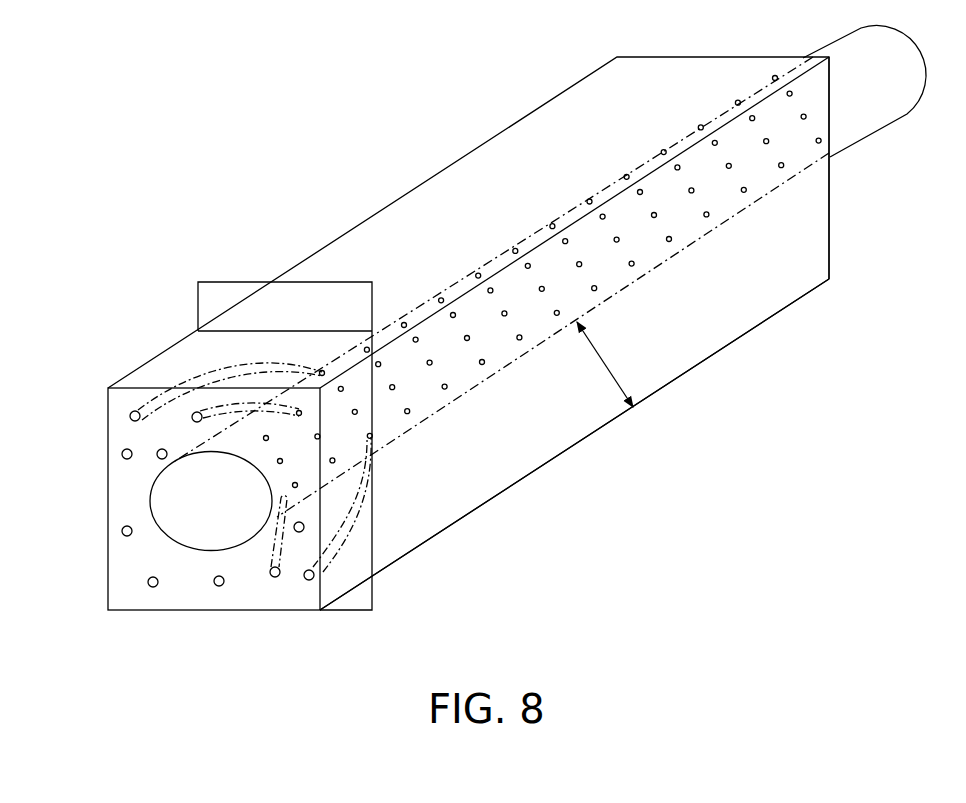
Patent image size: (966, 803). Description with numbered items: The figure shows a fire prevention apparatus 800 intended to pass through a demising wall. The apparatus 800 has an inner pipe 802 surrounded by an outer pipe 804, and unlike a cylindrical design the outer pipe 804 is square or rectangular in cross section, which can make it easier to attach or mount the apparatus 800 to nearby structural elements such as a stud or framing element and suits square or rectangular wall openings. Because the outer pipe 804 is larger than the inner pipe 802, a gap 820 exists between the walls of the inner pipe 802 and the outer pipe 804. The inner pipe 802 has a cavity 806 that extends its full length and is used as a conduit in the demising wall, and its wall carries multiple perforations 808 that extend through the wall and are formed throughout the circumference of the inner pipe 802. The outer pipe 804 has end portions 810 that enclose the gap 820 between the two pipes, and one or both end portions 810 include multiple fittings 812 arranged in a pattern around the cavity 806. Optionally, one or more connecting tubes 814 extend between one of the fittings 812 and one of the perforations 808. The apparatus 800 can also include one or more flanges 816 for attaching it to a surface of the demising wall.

The fire prevention apparatus 800 is at (419, 61).
The inner pipe 802 is at (472, 388).
The outer pipe 804 is at (507, 489).
The cavity 806 is at (185, 518).
The perforations 808 is at (671, 243).
The end portions 810 is at (120, 493).
The fittings 812 is at (219, 587).
The connecting tubes 814 is at (176, 387).
The flanges 816 is at (193, 291).
The gap 820 is at (616, 364).